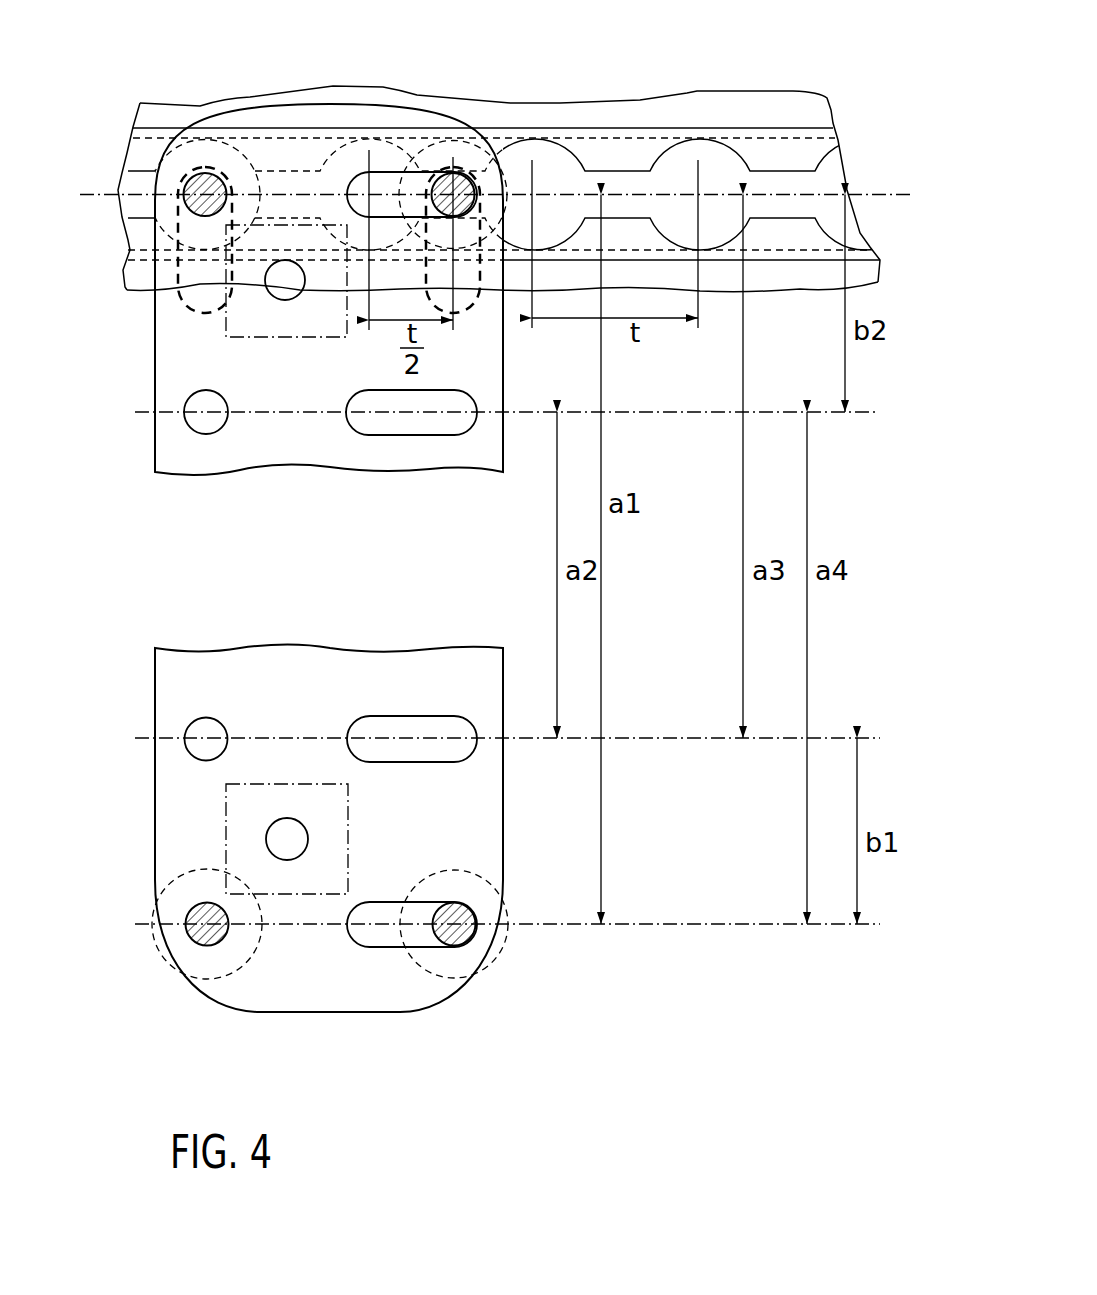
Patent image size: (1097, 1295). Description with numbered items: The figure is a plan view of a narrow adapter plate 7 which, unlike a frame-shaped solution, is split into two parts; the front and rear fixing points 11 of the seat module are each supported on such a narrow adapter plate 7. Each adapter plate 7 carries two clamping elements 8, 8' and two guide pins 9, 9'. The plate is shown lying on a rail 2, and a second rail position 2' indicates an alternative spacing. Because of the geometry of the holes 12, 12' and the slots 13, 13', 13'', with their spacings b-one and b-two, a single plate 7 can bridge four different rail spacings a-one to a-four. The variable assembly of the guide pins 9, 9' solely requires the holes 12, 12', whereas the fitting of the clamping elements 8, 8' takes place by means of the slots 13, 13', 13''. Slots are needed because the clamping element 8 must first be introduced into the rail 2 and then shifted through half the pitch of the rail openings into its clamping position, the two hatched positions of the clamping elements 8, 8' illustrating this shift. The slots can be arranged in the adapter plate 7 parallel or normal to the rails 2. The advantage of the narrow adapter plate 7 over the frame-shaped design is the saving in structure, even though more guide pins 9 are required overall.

The rail 2 is at (497, 515).
The rail 2' is at (507, 575).
The adapter plate 7 is at (417, 117).
The clamping element 8 is at (205, 113).
The clamping element 8' is at (460, 113).
The guide pin 9 is at (172, 961).
The guide pin 9' is at (491, 961).
The fixing point 11 is at (225, 334).
The hole 12 is at (286, 537).
The hole 12' is at (206, 575).
The slot 13 is at (412, 547).
The slot 13' is at (411, 576).
The slot 13'' is at (334, 276).